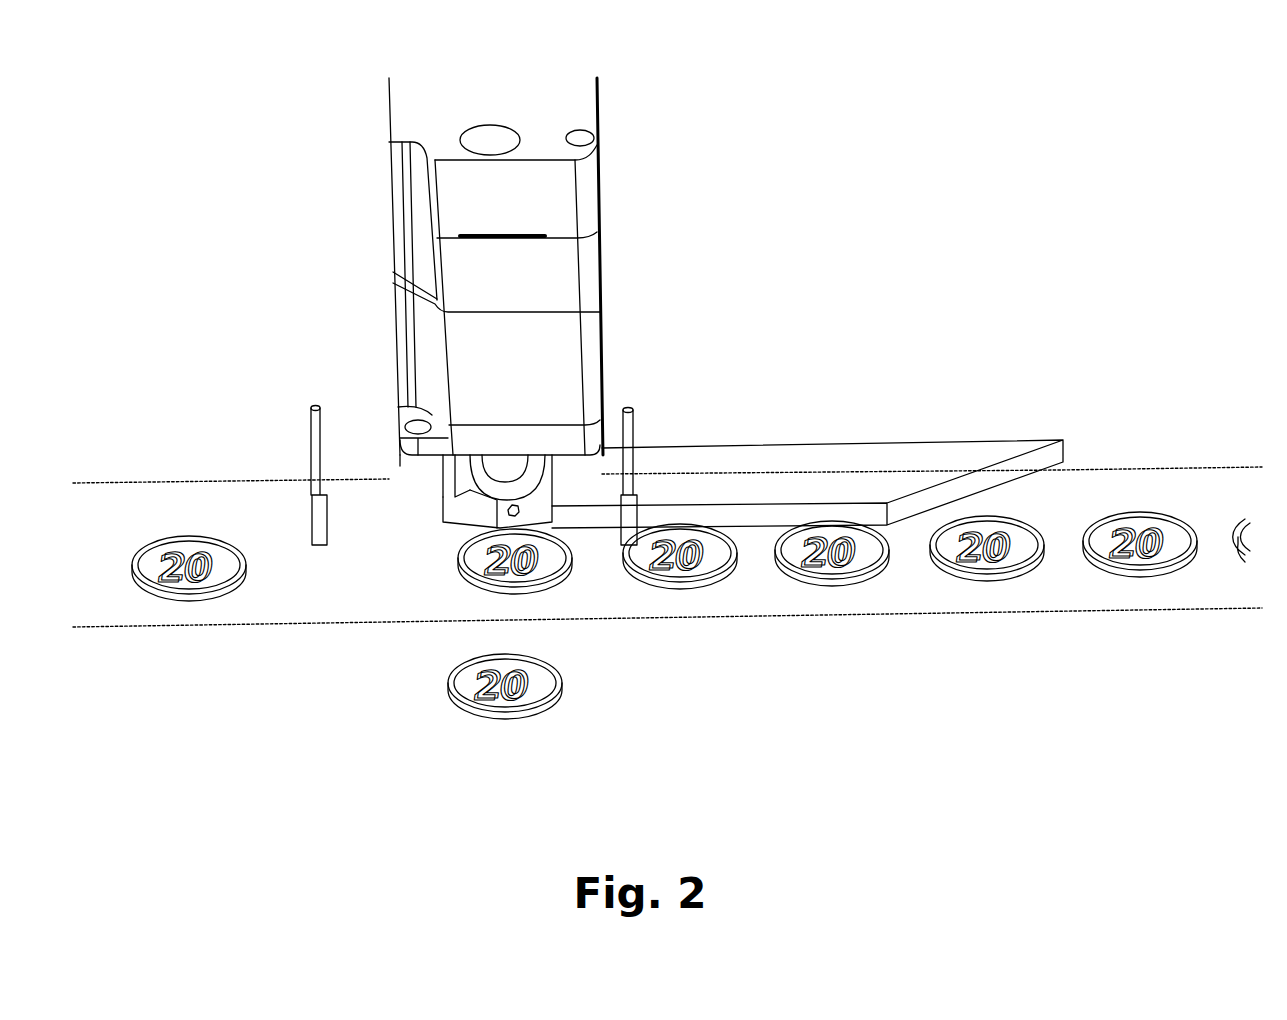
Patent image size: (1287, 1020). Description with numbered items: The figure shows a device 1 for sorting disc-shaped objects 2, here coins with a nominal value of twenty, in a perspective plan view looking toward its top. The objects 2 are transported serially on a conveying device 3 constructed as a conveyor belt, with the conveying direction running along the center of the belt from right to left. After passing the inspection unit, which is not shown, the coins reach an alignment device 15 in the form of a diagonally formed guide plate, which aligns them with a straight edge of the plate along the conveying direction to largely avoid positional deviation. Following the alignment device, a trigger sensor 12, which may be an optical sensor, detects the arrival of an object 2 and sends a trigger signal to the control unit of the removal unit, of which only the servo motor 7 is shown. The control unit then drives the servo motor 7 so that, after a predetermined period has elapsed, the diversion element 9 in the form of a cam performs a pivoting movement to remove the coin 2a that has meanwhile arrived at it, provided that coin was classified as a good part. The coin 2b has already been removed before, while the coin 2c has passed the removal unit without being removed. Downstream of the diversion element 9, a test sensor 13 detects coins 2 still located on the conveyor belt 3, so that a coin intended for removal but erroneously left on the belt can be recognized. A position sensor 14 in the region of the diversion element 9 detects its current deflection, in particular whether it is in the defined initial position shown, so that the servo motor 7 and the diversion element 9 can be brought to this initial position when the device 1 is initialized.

The device 1 is at (1170, 176).
The disc-shaped objects 2 is at (720, 588).
The coin 2a is at (567, 582).
The coin 2b is at (558, 702).
The coin 2c is at (207, 603).
The conveying device 3 is at (1137, 467).
The servo motor 7 is at (603, 290).
The diversion element 9 is at (447, 522).
The trigger sensor 12 is at (633, 431).
The test sensor 13 is at (310, 467).
The position sensor 14 is at (400, 466).
The alignment device 15 is at (838, 446).